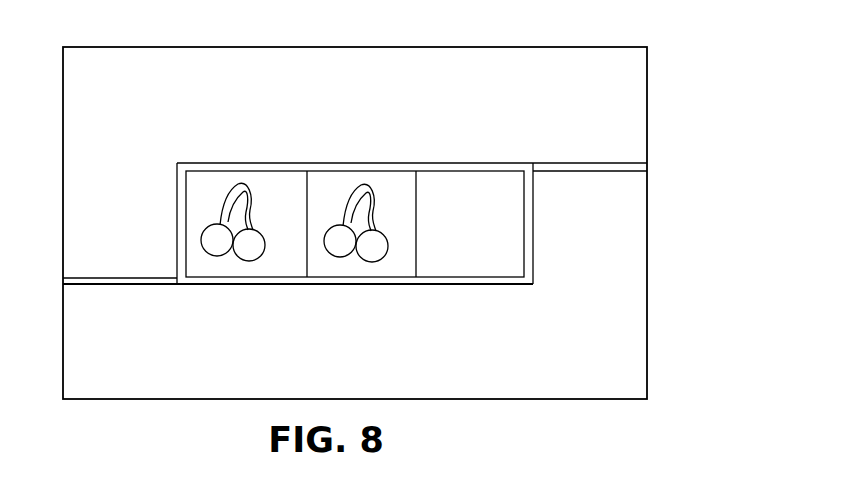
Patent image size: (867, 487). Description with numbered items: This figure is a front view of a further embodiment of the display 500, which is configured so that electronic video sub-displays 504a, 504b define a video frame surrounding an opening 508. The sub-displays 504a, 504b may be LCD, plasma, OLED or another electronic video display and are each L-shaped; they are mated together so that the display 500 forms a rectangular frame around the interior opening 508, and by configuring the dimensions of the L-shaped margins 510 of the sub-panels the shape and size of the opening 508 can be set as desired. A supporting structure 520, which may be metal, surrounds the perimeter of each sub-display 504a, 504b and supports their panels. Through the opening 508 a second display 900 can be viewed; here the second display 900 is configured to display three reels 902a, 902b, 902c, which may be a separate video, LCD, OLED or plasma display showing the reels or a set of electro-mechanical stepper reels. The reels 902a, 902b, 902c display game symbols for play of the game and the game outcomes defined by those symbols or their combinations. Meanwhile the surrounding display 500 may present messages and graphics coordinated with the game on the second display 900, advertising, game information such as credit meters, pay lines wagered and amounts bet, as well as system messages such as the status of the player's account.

The display 500 is at (702, 245).
The sub-display 504a is at (632, 97).
The sub-display 504b is at (467, 387).
The opening 508 is at (323, 285).
The L-shaped margins 510 is at (583, 163).
The supporting structure 520 is at (557, 47).
The second display 900 is at (400, 146).
The reel 902a is at (215, 183).
The reel 902b is at (324, 182).
The reel 902c is at (488, 268).